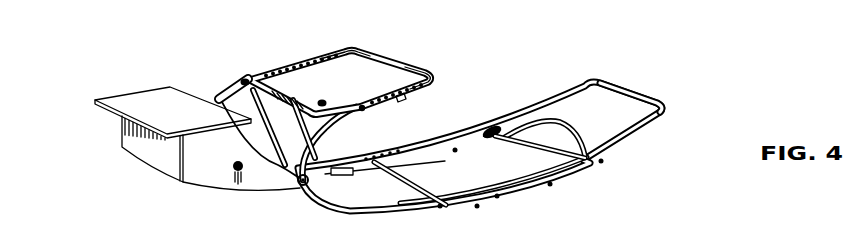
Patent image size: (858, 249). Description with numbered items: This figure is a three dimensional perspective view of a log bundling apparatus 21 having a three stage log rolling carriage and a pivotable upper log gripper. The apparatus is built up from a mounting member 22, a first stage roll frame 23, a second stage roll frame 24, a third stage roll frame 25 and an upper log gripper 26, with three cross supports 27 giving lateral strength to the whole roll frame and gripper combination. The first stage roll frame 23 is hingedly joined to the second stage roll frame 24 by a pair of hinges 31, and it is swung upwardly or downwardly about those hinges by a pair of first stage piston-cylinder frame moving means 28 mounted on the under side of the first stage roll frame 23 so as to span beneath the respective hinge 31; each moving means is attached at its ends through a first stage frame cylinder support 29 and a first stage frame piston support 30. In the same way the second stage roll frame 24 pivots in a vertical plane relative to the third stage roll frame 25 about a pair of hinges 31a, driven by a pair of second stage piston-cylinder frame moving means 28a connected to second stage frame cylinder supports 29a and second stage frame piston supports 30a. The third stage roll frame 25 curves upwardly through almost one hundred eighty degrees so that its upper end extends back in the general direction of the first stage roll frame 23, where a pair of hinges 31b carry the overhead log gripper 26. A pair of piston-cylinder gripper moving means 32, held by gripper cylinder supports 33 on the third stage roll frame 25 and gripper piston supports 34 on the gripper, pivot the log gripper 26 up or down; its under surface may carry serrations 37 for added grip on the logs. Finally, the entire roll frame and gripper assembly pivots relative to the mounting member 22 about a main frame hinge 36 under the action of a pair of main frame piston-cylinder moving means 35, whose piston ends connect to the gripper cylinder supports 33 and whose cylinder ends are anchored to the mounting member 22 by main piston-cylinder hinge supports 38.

The log bundling apparatus 21 is at (648, 195).
The mounting member 22 is at (207, 168).
The first stage roll frame 23 is at (660, 97).
The second stage roll frame 24 is at (450, 128).
The third stage roll frame 25 is at (383, 216).
The upper log gripper 26 is at (413, 66).
The cross supports 27 is at (313, 60).
The first stage piston-cylinder frame moving means 28 is at (480, 139).
The second stage piston-cylinder frame moving means 28a is at (477, 209).
The first stage frame cylinder support 29 is at (452, 149).
The second stage frame cylinder support 29a is at (438, 211).
The first stage frame piston support 30 is at (602, 161).
The second stage frame piston support 30a is at (495, 197).
The hinges 31 is at (492, 124).
The hinges 31a is at (383, 151).
The hinges 31b is at (366, 112).
The piston-cylinder gripper moving means 32 is at (275, 72).
The gripper cylinder supports 33 is at (243, 79).
The gripper piston supports 34 is at (434, 75).
The main frame piston-cylinder moving means 35 is at (216, 97).
The main frame hinge 36 is at (315, 202).
The serrations 37 is at (401, 98).
The main piston-cylinder hinge supports 38 is at (244, 178).